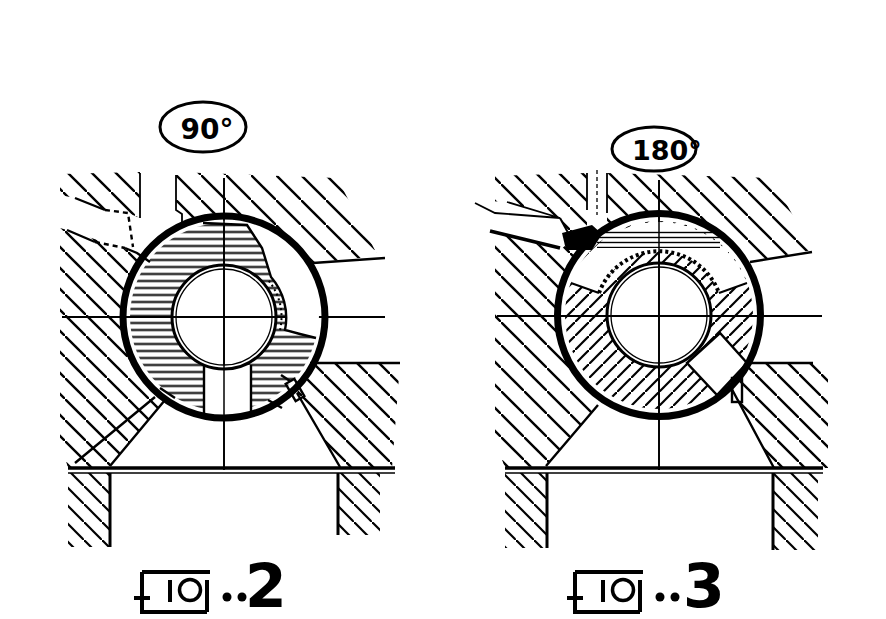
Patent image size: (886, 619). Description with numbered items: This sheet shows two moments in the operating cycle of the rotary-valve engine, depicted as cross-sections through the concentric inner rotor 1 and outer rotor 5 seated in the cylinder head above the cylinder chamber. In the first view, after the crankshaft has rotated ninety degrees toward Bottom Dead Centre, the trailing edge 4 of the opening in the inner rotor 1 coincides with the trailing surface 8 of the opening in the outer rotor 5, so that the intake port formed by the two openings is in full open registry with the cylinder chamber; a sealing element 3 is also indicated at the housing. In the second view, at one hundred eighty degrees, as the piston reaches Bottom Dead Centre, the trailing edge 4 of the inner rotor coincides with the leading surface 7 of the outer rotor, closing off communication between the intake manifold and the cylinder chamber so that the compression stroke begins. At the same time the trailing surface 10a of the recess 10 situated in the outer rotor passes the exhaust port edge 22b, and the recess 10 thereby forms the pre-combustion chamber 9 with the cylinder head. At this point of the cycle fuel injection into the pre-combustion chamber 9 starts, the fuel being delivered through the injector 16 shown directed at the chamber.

In FIG. 2, the inner rotor 1 is at (245, 262).
In FIG. 2, the sealing element 3 is at (348, 368).
In FIG. 3, the trailing edge of the inner rotor opening 4 is at (745, 253).
In FIG. 2, the outer rotor 5 is at (160, 267).
In FIG. 2, the leading surface of the outer rotor 7 is at (145, 393).
In FIG. 3, the leading surface of the outer rotor 7 is at (760, 340).
In FIG. 2, the trailing surface of the outer rotor opening 8 is at (192, 412).
In FIG. 3, the trailing surface of the outer rotor opening 8 is at (717, 364).
In FIG. 3, the pre-combustion chamber 9 is at (632, 212).
In FIG. 3, the recess 10 is at (598, 215).
In FIG. 3, the trailing surface of the recess 10a is at (728, 240).
In FIG. 3, the injector 16 is at (555, 240).
In FIG. 3, the exhaust port edge 22b is at (792, 307).